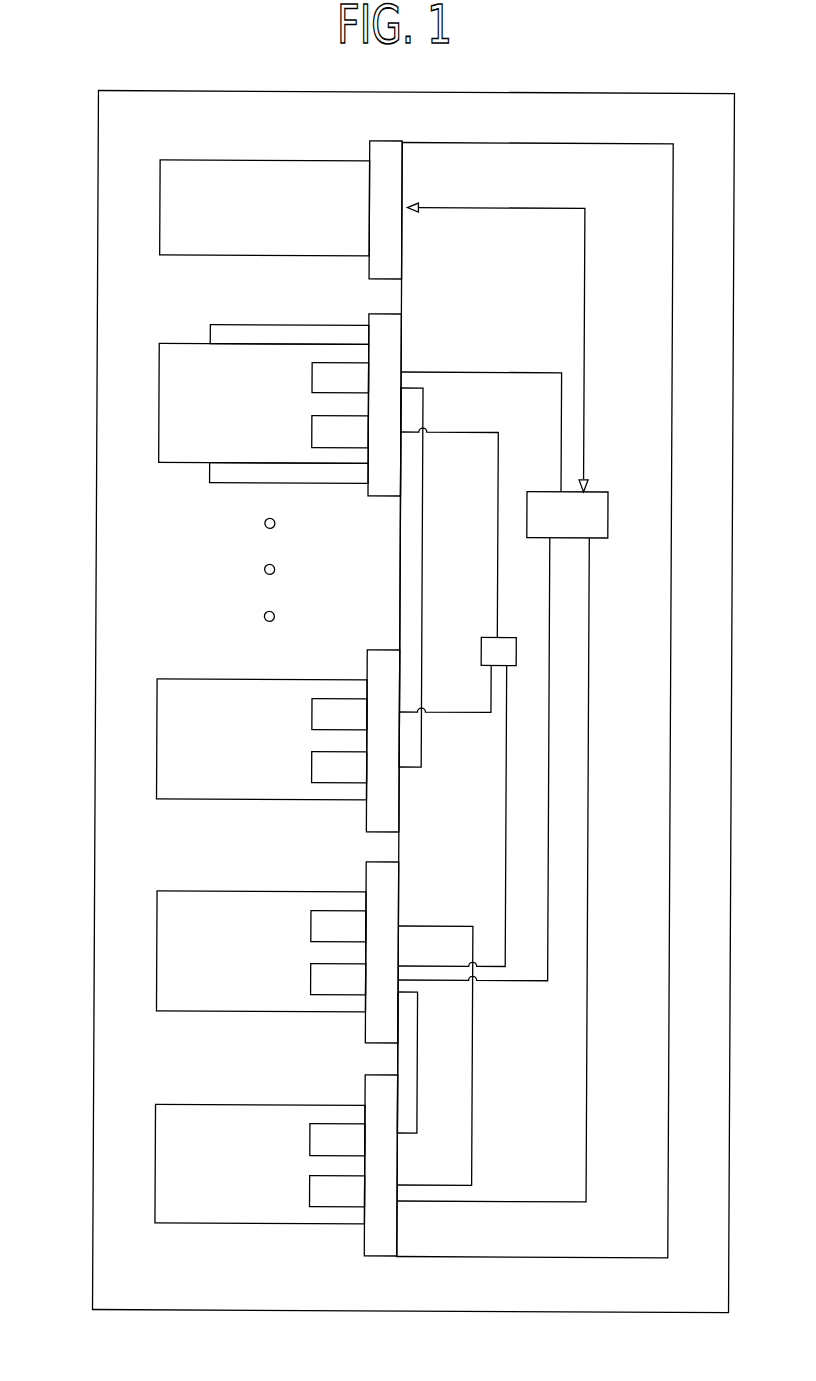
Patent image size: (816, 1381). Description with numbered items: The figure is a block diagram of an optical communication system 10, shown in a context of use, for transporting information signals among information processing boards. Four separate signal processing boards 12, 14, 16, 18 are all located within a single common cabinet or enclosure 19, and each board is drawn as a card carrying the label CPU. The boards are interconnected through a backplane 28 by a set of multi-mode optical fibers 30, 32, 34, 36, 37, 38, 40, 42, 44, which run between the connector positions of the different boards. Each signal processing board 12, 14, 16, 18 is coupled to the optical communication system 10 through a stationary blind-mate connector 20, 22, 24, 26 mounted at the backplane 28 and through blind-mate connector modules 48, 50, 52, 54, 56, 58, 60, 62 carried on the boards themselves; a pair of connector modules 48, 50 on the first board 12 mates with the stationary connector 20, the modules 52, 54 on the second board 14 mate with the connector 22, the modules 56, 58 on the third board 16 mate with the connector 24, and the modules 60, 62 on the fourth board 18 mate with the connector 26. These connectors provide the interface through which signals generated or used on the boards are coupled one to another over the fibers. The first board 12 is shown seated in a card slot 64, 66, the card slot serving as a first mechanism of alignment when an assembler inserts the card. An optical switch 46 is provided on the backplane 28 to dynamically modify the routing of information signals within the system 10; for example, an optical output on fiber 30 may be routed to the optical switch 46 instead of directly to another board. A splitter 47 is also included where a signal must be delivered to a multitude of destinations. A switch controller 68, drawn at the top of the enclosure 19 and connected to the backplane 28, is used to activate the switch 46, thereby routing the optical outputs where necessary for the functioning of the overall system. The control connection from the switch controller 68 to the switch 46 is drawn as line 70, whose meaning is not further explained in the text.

The optical communication system 10 is at (322, 1263).
The signal processing board 12 is at (177, 345).
The signal processing board 14 is at (177, 680).
The signal processing board 16 is at (177, 892).
The signal processing board 18 is at (177, 1106).
The enclosure 19 is at (98, 236).
The stationary blind-mate connector 20 is at (383, 314).
The stationary blind-mate connector 22 is at (375, 650).
The stationary blind-mate connector 24 is at (375, 862).
The stationary blind-mate connector 26 is at (375, 1075).
The backplane 28 is at (485, 1258).
The multi-mode optical fiber 30 is at (478, 372).
The multi-mode optical fiber 32 is at (422, 524).
The multi-mode optical fiber 34 is at (478, 432).
The multi-mode optical fiber 36 is at (475, 712).
The multi-mode optical fiber 37 is at (506, 809).
The multi-mode optical fiber 38 is at (549, 808).
The multi-mode optical fiber 40 is at (588, 1039).
The multi-mode optical fiber 42 is at (474, 1138).
The multi-mode optical fiber 44 is at (419, 1078).
The optical switch 46 is at (607, 525).
The splitter 47 is at (481, 650).
The blind-mate connector module 48 is at (331, 363).
The blind-mate connector module 50 is at (336, 448).
The blind-mate connector module 52 is at (312, 712).
The blind-mate connector module 54 is at (312, 762).
The blind-mate connector module 56 is at (312, 925).
The blind-mate connector module 58 is at (312, 975).
The blind-mate connector module 60 is at (327, 1124).
The blind-mate connector module 62 is at (327, 1207).
The card slot 64 is at (241, 325).
The card slot 66 is at (241, 484).
The switch controller 68 is at (177, 161).
The control signal line 70 is at (584, 290).